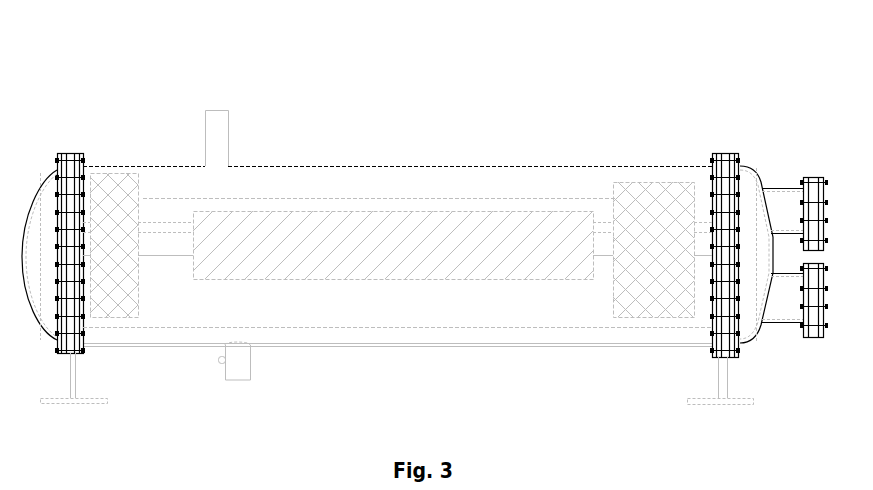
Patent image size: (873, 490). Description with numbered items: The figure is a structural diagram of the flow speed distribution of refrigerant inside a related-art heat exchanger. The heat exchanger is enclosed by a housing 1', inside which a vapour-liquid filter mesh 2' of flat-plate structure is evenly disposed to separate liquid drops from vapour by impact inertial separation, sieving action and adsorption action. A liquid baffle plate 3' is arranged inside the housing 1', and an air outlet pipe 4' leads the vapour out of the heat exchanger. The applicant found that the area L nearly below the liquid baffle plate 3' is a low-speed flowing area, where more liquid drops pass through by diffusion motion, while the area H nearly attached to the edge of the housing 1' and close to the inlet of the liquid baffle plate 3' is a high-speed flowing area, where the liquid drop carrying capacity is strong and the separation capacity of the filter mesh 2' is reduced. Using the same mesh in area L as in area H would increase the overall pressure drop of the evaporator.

The housing 1' is at (425, 209).
The vapour-liquid filter mesh 2' is at (397, 134).
The liquid baffle plate 3' is at (397, 171).
The air outlet pipe 4' is at (191, 90).
The high-speed flowing area H is at (118, 277).
The low-speed flowing area L is at (388, 267).